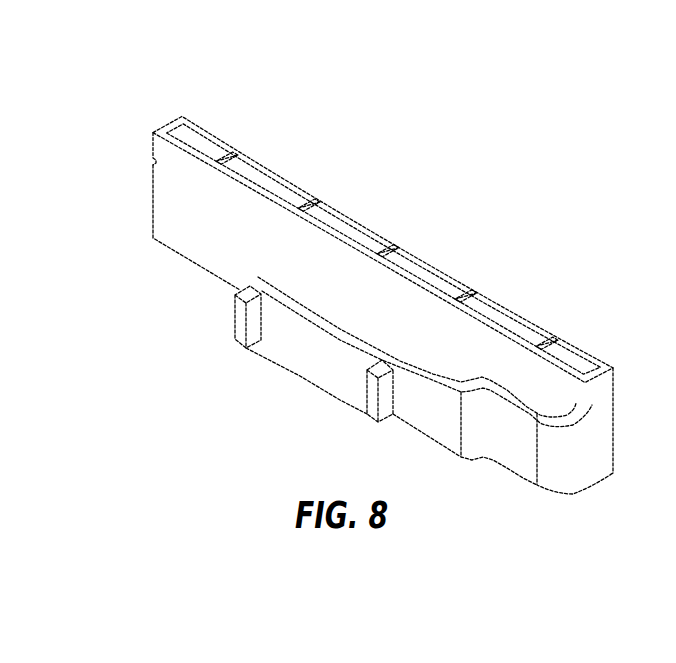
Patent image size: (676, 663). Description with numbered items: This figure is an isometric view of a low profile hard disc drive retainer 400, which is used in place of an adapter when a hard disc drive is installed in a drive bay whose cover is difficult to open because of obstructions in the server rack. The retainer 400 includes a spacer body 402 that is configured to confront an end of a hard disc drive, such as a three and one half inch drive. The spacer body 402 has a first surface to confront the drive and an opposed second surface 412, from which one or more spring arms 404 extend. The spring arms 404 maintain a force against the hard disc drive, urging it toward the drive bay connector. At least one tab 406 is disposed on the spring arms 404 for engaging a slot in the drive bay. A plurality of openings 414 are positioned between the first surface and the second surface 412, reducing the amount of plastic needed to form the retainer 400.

The hard disc drive retainer 400 is at (548, 142).
The spacer body 402 is at (522, 313).
The spring arm 404 is at (302, 367).
The tab 406 is at (237, 324).
The second surface 412 is at (176, 233).
The openings 414 is at (333, 200).